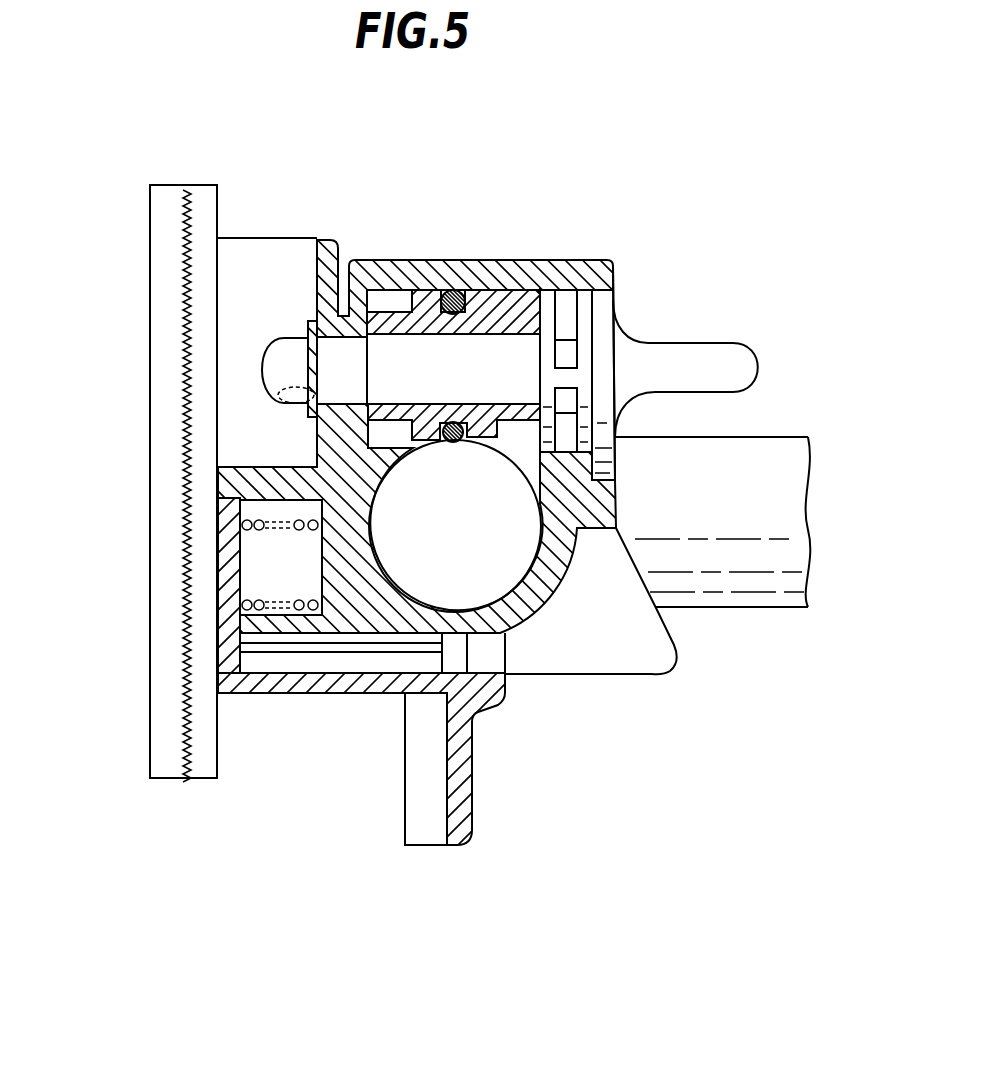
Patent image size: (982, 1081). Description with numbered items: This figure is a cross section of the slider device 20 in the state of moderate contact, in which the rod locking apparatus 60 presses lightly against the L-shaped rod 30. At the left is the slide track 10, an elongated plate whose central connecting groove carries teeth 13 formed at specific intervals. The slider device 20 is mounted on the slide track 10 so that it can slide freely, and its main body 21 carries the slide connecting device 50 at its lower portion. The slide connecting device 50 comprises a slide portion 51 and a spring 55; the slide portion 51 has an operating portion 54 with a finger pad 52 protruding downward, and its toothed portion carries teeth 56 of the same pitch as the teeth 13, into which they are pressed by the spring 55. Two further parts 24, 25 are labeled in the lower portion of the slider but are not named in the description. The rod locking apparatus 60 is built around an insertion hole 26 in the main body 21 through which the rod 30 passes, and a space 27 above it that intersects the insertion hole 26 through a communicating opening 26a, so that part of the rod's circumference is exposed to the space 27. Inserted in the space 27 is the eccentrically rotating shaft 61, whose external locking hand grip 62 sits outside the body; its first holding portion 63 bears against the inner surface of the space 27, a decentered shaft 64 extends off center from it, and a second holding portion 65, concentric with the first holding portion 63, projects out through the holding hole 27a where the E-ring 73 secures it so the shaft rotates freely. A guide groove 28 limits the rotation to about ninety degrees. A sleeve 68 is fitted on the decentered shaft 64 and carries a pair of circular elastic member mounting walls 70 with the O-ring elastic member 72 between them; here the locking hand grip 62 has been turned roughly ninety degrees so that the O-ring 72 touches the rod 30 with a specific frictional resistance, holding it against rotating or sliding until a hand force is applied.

The slide track 10 is at (160, 213).
The teeth 13 is at (190, 253).
The slider device 20 is at (547, 718).
The main body 21 is at (391, 272).
The guide member 24 is at (333, 665).
The base plate 25 is at (385, 665).
The insertion hole 26 is at (538, 548).
The communicating opening 26a is at (502, 445).
The space 27 is at (537, 292).
The holding hole 27a is at (312, 387).
The guide groove 28 is at (598, 305).
The rod 30 is at (477, 572).
The slide connecting device 50 is at (277, 732).
The slide portion 51 is at (470, 695).
The finger pad 52 is at (427, 822).
The operating portion 54 is at (240, 675).
The spring 55 is at (297, 592).
The teeth 56 is at (205, 597).
The rod locking apparatus 60 is at (601, 242).
The eccentrically rotating shaft 61 is at (622, 353).
The locking hand grip 62 is at (737, 370).
The first holding portion 63 is at (583, 333).
The decentered shaft 64 is at (512, 300).
The second holding portion 65 is at (274, 374).
The sleeve 68 is at (418, 410).
The elastic member mounting walls 70 is at (441, 294).
The elastic member 72 is at (470, 370).
The E-ring 73 is at (308, 321).